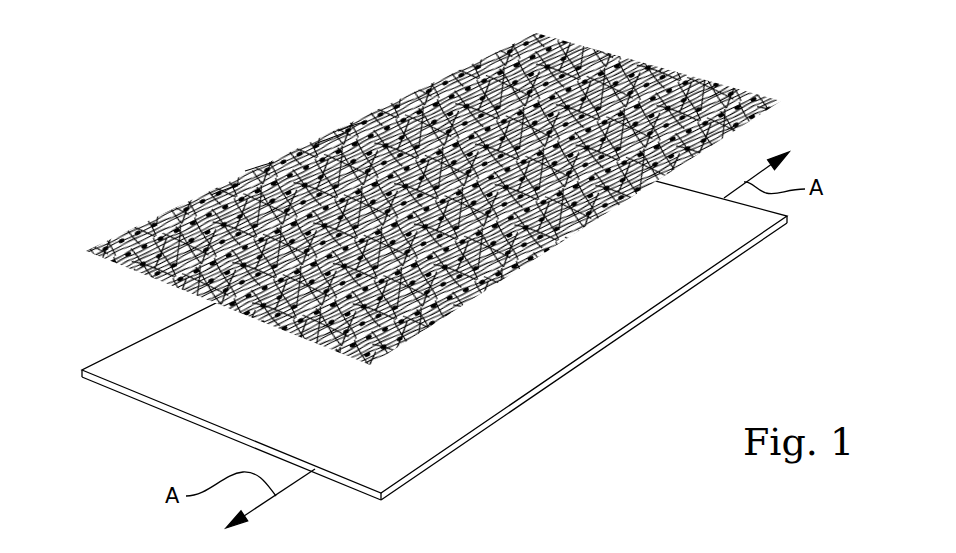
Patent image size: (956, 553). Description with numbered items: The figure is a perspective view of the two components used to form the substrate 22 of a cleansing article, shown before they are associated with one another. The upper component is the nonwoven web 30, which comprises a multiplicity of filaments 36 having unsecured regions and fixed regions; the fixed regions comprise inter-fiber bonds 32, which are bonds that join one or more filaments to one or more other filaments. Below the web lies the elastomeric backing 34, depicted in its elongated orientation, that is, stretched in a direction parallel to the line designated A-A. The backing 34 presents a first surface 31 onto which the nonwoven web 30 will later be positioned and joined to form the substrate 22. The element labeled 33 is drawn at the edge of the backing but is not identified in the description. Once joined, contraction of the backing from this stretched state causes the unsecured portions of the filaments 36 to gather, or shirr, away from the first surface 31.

The substrate 22 is at (417, 266).
The nonwoven web 30 is at (433, 199).
The first surface 31 is at (643, 268).
The inter-fiber bonds 32 is at (237, 163).
The substrate 33 is at (434, 323).
The backing 34 is at (427, 452).
The filaments 36 is at (330, 123).